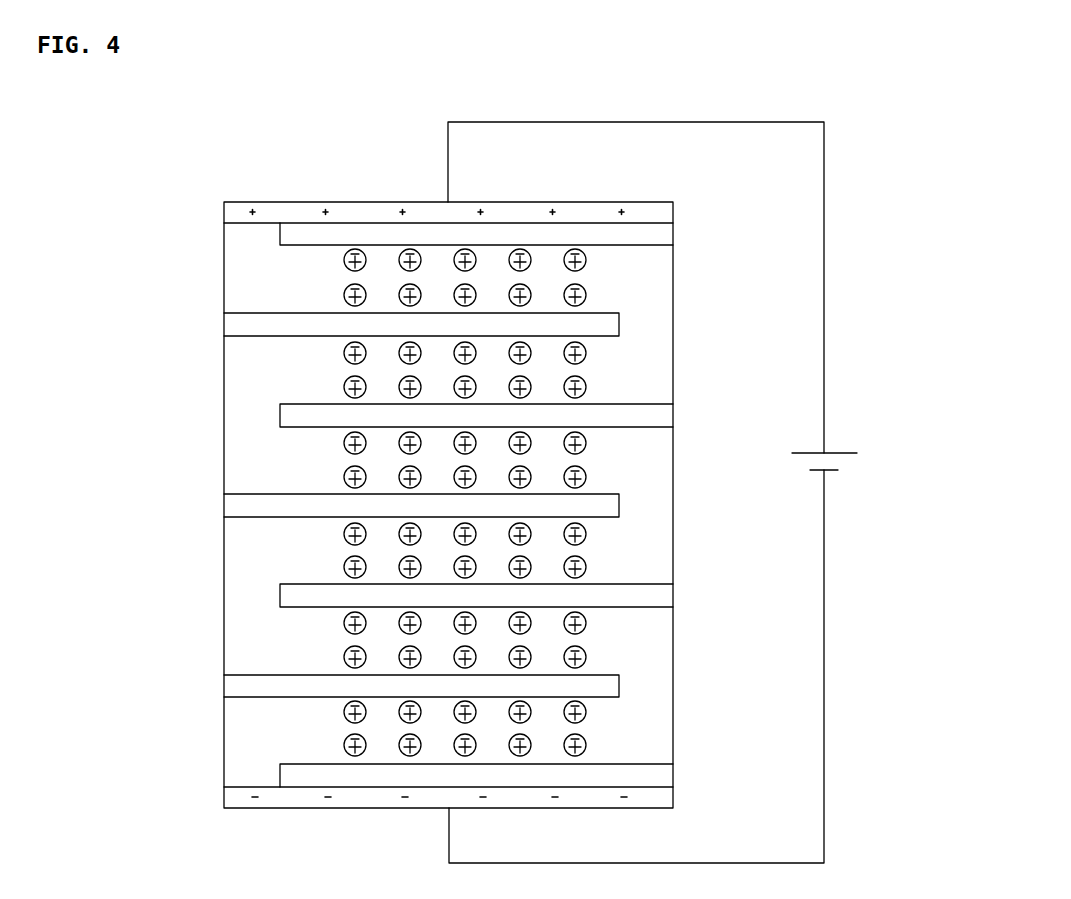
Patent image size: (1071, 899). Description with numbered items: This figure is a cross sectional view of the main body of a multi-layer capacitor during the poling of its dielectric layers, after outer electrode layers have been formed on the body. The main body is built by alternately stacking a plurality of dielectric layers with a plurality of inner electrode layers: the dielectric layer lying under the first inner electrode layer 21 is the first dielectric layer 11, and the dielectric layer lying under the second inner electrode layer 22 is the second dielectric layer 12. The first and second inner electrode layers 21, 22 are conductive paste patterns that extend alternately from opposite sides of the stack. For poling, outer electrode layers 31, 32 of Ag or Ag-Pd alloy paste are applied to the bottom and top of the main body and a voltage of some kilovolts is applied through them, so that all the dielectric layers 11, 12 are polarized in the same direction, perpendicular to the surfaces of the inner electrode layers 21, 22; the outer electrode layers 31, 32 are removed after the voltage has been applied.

The first dielectric layer 11 is at (642, 370).
The second dielectric layer 12 is at (633, 268).
The first inner electrode layer 21 is at (266, 327).
The second inner electrode layer 22 is at (284, 238).
The outer electrode layer 31 is at (370, 800).
The outer electrode layer 32 is at (580, 210).